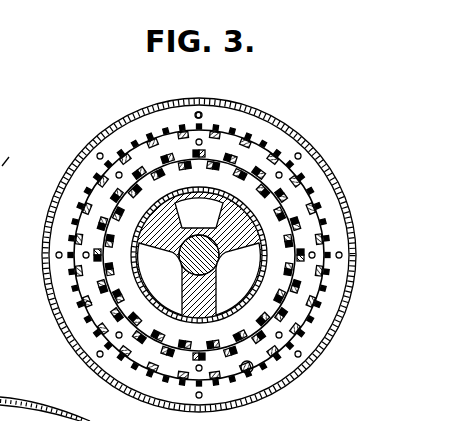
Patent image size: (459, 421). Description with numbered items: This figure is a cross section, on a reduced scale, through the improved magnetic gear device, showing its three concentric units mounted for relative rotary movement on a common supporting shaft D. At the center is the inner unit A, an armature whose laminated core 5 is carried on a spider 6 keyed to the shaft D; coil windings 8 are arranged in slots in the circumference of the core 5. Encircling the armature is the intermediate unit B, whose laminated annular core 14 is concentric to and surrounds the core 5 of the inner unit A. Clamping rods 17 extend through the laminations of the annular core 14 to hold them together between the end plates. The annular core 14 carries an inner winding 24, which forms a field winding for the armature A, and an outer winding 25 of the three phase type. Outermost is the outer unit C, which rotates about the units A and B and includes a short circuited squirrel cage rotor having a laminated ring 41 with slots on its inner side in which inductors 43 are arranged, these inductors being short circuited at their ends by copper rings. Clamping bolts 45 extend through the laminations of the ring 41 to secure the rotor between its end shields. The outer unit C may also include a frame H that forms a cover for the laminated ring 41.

The laminated ring 41 is at (72, 174).
The frame H is at (92, 141).
The clamping rods 17 is at (85, 246).
The laminated annular core 14 is at (80, 277).
The inductors 43 is at (327, 227).
The coil windings 8 is at (221, 342).
The inner winding 24 is at (118, 322).
The inner unit A is at (245, 190).
The intermediate unit B is at (285, 185).
The outer unit C is at (327, 188).
The clamping bolts 45 is at (198, 112).
The outer winding 25 is at (84, 306).
The shaft D is at (200, 240).
The spider 6 is at (185, 287).
The laminated core 5 is at (258, 287).